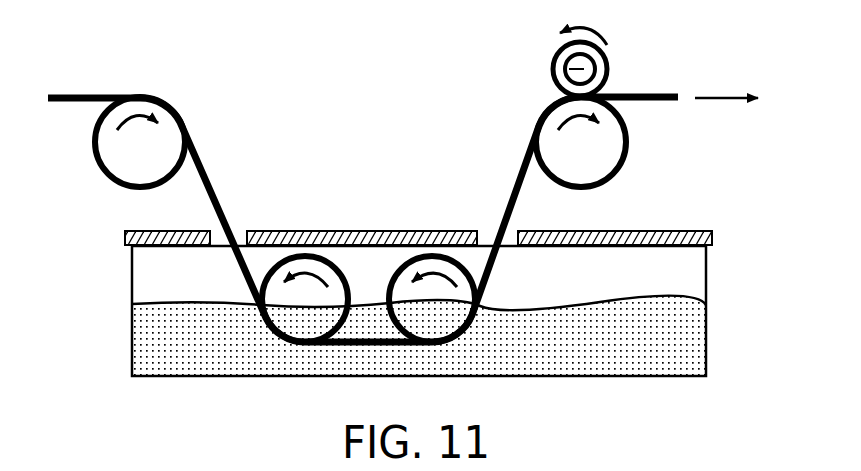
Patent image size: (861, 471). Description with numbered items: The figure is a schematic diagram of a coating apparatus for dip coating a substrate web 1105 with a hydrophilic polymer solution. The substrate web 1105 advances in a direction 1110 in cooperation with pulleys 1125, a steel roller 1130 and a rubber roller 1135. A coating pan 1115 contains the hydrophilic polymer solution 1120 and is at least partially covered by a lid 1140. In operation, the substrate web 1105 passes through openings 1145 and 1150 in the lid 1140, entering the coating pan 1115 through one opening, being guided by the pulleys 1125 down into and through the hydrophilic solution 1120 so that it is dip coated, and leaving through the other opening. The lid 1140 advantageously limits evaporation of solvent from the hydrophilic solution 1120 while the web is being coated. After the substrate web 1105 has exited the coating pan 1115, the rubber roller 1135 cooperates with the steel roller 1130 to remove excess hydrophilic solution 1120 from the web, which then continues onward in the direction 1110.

The substrate web 1105 is at (78, 96).
The direction 1110 is at (728, 95).
The coating pan 1115 is at (706, 272).
The hydrophilic polymer solution 1120 is at (682, 348).
The pulleys 1125 is at (108, 151).
The steel roller 1130 is at (612, 142).
The rubber roller 1135 is at (554, 67).
The lid 1140 is at (128, 240).
The opening 1145 is at (239, 206).
The opening 1150 is at (487, 206).